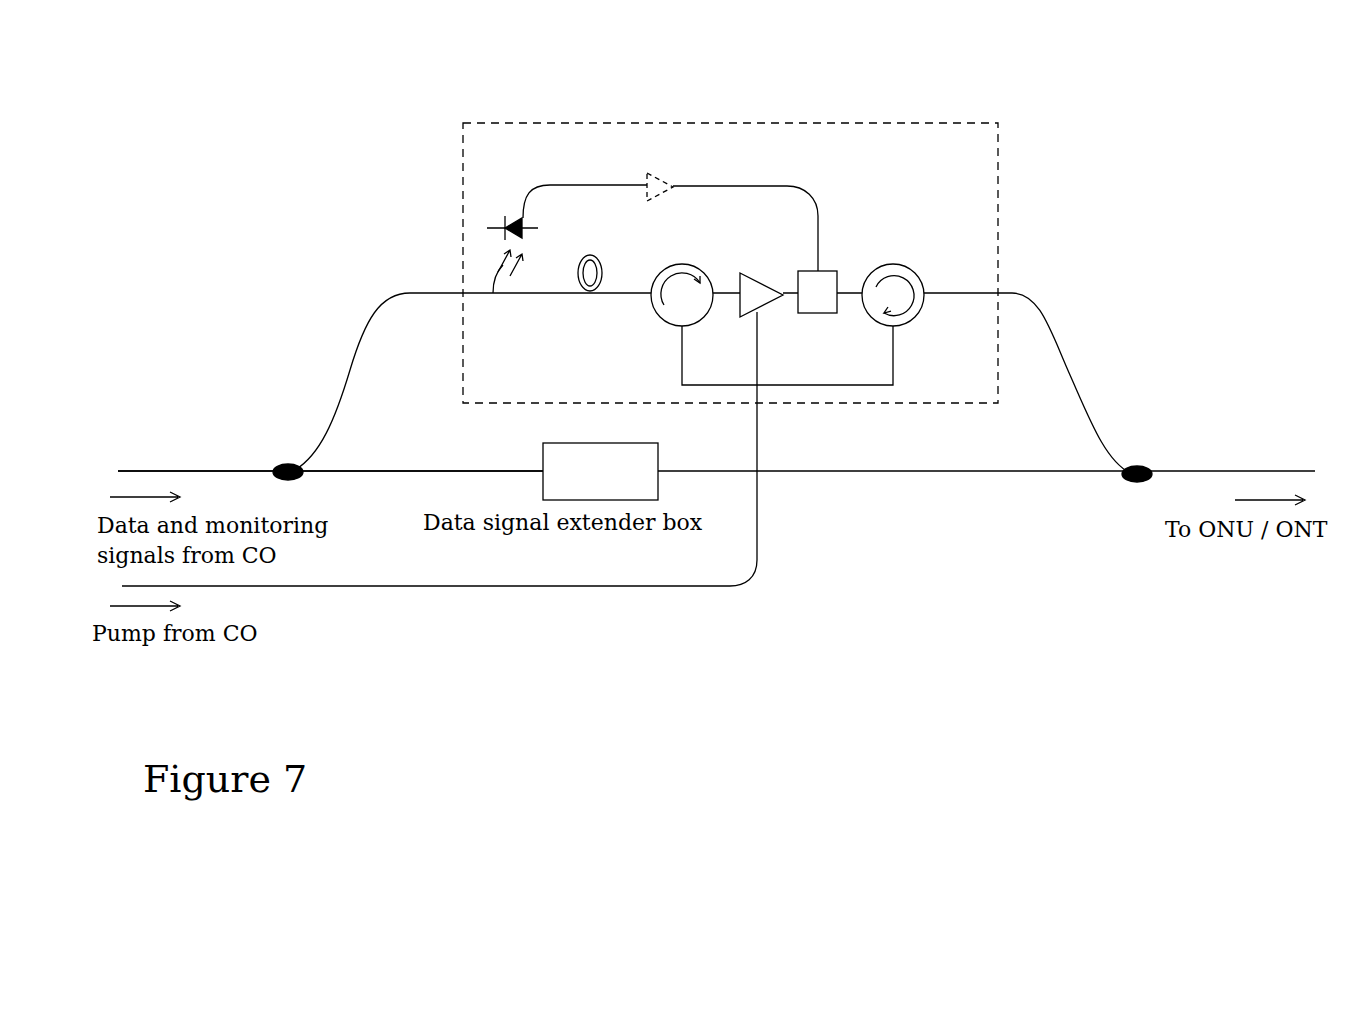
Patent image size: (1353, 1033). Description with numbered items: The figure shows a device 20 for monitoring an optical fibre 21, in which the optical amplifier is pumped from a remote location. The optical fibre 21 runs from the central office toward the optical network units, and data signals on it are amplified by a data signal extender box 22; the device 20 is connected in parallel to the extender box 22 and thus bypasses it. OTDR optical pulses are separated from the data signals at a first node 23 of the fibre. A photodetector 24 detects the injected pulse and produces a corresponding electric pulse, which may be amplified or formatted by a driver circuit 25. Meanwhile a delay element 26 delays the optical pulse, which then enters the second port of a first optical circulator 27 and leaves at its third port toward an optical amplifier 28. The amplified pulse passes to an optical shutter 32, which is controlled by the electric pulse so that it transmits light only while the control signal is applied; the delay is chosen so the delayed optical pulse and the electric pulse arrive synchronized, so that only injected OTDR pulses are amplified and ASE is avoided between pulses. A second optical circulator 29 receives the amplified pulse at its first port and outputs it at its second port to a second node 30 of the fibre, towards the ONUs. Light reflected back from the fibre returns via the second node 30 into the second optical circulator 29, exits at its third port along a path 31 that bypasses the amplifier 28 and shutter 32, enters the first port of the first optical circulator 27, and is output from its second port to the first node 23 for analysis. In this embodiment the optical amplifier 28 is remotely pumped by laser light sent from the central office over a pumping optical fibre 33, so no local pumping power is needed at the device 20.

The device for monitoring an optical fibre 20 is at (993, 163).
The optical fibre 21 is at (405, 468).
The data signal extender box 22 is at (600, 471).
The first node 23 is at (290, 455).
The photodetector 24 is at (487, 228).
The driver circuit 25 is at (678, 175).
The delay element 26 is at (580, 293).
The first optical circulator 27 is at (683, 252).
The optical amplifier 28 is at (740, 313).
The second optical circulator 29 is at (905, 262).
The second node 30 is at (1125, 487).
The path 31 is at (730, 393).
The optical shutter 32 is at (830, 268).
The pumping optical fibre 33 is at (760, 530).